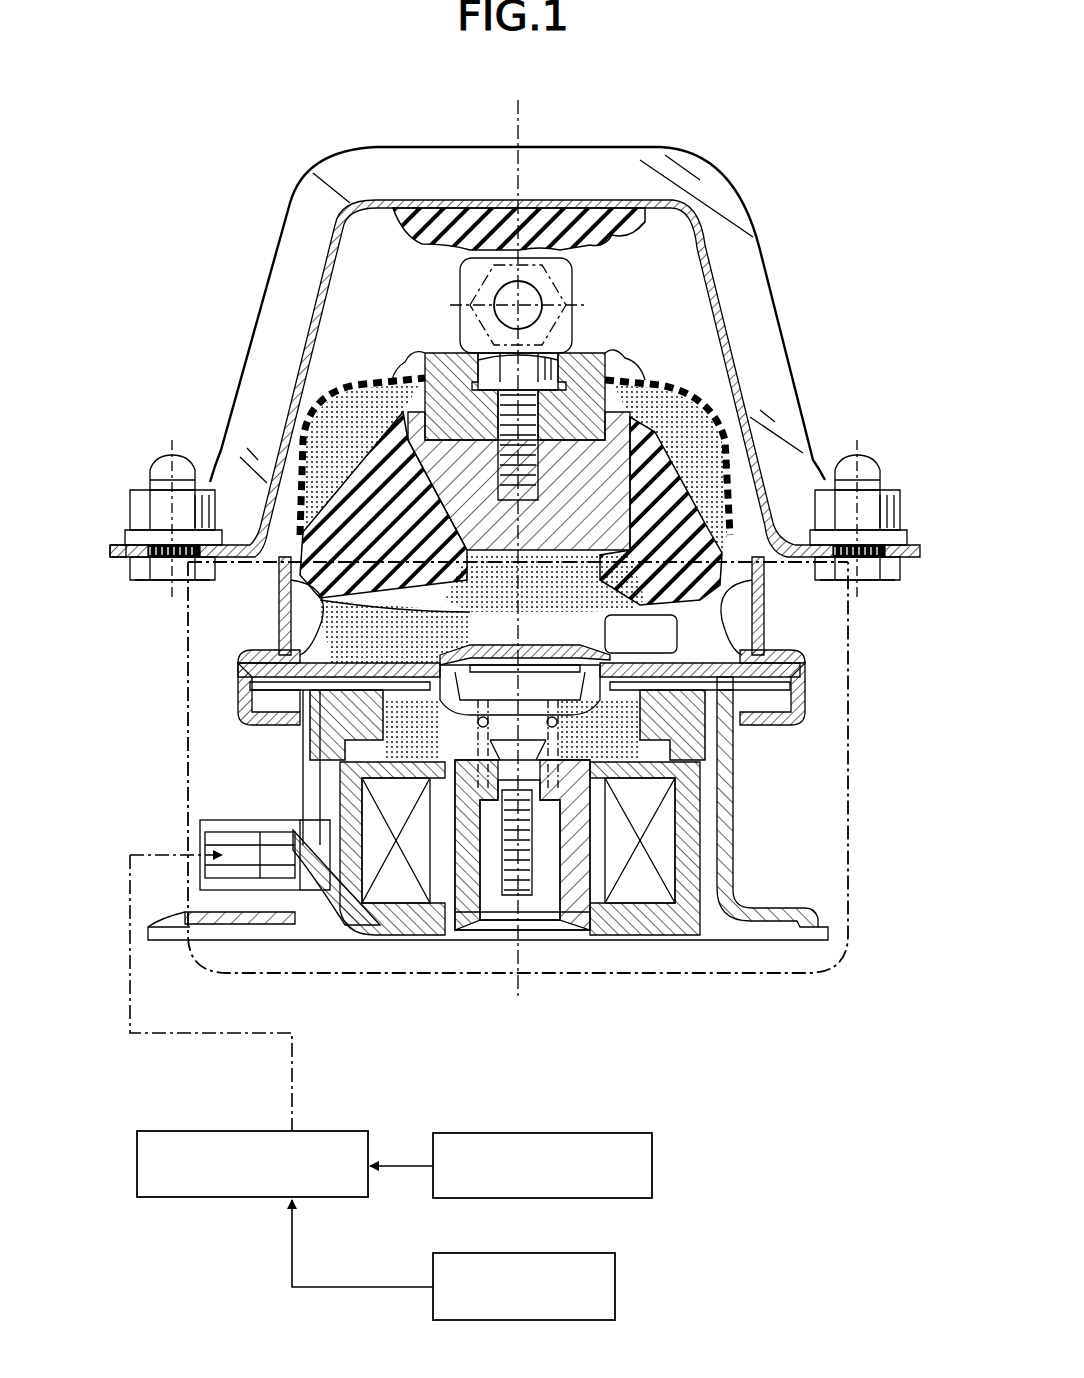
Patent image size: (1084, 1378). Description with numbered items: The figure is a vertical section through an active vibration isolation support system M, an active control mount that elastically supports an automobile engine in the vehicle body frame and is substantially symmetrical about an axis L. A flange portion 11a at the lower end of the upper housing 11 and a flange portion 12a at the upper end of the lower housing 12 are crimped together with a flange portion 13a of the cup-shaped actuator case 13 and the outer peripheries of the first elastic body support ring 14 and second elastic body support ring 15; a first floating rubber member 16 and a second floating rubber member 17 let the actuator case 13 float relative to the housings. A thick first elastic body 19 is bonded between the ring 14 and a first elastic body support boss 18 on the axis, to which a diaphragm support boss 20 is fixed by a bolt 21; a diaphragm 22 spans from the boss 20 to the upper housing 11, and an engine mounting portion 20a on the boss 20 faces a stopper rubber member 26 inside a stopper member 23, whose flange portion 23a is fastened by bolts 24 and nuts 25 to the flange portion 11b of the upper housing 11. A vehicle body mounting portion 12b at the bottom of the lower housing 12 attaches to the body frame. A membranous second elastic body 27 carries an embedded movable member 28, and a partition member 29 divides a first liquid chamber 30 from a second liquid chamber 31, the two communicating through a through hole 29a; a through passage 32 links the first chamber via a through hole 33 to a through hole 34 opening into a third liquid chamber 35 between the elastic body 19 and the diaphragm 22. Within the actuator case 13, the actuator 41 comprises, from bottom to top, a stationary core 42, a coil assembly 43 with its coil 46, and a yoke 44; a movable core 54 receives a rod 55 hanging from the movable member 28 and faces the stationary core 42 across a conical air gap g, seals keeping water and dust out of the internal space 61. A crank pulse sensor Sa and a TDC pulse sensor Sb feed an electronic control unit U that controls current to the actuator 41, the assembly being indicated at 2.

The axis L is at (518, 118).
The active vibration isolation support system M is at (800, 314).
The stopper member 23 is at (310, 298).
The flange portion 23a is at (106, 540).
The stopper rubber member 26 is at (442, 232).
The engine mounting portion 20a is at (575, 282).
The diaphragm support boss 20 is at (602, 352).
The bolt 21 is at (490, 365).
The diaphragm 22 is at (374, 380).
The first elastic body support boss 18 is at (478, 489).
The first elastic body 19 is at (620, 458).
The third liquid chamber 35 is at (361, 463).
The through hole 34 is at (735, 527).
The first liquid chamber 30 is at (601, 612).
The first elastic body support ring 14 is at (335, 628).
The second elastic body support ring 15 is at (348, 660).
The nuts 25 is at (190, 468).
The bolts 24 is at (158, 578).
The flange portion 11b is at (118, 563).
The upper housing 11 is at (268, 613).
The flange portion 11a is at (232, 690).
The through passage 32 is at (300, 608).
The through hole 33 is at (705, 655).
The actuator case 13 is at (712, 846).
The flange portion 13a is at (812, 675).
The first floating rubber member 16 is at (234, 728).
The second floating rubber member 17 is at (310, 720).
The yoke 44 is at (653, 768).
The second liquid chamber 31 is at (411, 730).
The second elastic body 27 is at (575, 700).
The partition member 29 is at (486, 645).
The through hole 29a is at (510, 660).
The movable member 28 is at (520, 690).
The rod 55 is at (530, 722).
The internal space 61 is at (680, 653).
The lower housing 12 is at (737, 812).
The flange portion 12a is at (755, 705).
The vehicle body mounting portion 12b is at (778, 925).
The coil 46 is at (411, 903).
The movable core 54 is at (368, 786).
The stationary core 42 is at (572, 922).
The coil assembly 43 is at (690, 922).
The air gap g is at (502, 925).
The actuator 41 is at (290, 784).
The electronic control unit U is at (236, 1130).
The crank pulse sensor Sa is at (598, 1133).
The TDC pulse sensor Sb is at (590, 1253).
The actuator 2 is at (792, 992).